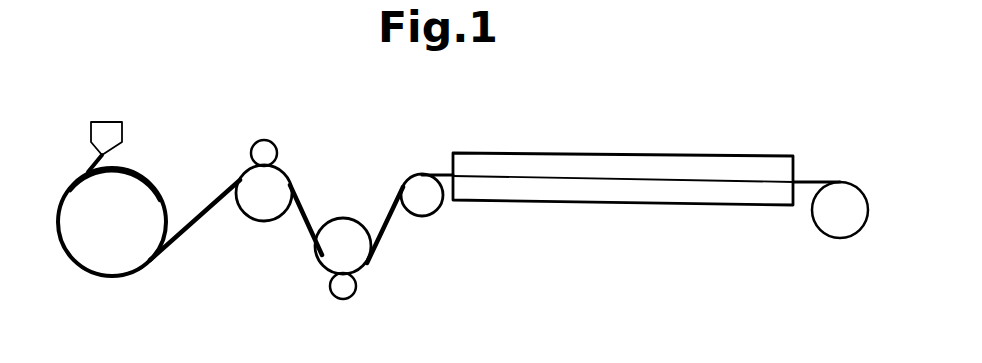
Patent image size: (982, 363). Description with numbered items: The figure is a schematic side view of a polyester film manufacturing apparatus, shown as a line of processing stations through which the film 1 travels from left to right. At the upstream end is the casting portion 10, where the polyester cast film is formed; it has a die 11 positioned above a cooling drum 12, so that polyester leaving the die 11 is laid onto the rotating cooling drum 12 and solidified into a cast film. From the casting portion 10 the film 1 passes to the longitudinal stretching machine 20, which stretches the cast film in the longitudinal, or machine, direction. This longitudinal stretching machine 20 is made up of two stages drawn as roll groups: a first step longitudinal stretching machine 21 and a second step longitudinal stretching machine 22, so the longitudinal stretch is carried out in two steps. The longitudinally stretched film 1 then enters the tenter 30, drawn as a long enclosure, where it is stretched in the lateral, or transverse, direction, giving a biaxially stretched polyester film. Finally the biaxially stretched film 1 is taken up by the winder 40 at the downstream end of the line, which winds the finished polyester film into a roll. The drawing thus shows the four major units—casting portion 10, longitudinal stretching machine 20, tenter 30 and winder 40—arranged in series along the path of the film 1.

The sheet / web 1 is at (294, 184).
The casting portion 10 is at (87, 290).
The die 11 is at (106, 121).
The cooling drum 12 is at (146, 172).
The longitudinal stretching machine 20 is at (243, 237).
The first step longitudinal stretching machine 21 is at (269, 137).
The second step longitudinal stretching machine 22 is at (368, 287).
The tenter 30 is at (509, 225).
The winder 40 is at (816, 229).